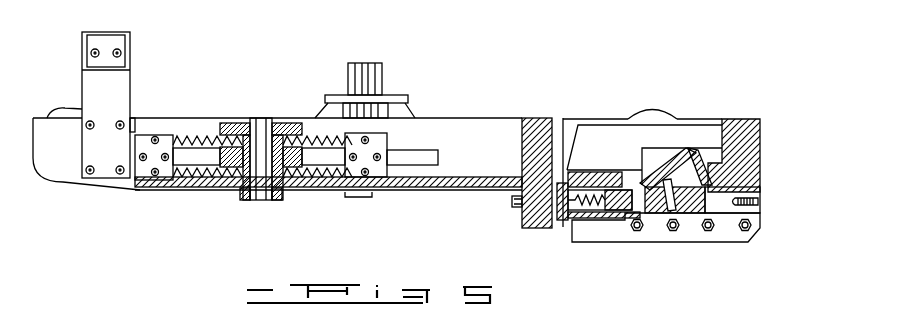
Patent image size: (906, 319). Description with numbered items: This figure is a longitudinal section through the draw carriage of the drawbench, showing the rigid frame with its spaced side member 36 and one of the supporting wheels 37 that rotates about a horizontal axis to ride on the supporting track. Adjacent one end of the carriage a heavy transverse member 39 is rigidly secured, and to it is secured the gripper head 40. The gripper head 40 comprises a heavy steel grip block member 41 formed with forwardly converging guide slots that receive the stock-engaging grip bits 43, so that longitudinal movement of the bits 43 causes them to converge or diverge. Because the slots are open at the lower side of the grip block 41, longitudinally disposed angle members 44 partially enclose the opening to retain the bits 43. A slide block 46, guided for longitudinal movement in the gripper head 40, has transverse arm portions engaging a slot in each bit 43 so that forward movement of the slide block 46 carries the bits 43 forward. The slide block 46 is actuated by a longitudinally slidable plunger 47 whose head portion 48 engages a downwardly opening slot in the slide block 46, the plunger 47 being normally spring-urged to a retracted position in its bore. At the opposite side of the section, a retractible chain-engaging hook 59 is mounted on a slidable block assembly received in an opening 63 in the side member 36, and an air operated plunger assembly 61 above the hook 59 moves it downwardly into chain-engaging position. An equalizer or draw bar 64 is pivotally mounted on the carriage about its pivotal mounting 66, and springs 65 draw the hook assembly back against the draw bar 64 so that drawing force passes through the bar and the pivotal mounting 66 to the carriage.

The side member 36 is at (458, 130).
The supporting wheel 37 is at (657, 110).
The transverse member 39 is at (530, 150).
The gripper head 40 is at (614, 166).
The grip block member 41 is at (741, 128).
The grip bit 43 is at (723, 205).
The angle member 44 is at (725, 232).
The slide block 46 is at (692, 218).
The plunger 47 is at (600, 218).
The head portion 48 is at (653, 218).
The chain-engaging hook 59 is at (373, 197).
The air operated plunger assembly 61 is at (382, 78).
The opening 63 is at (428, 162).
The draw bar 64 is at (243, 128).
The spring 65 is at (200, 178).
The pivotal mounting 66 is at (258, 200).